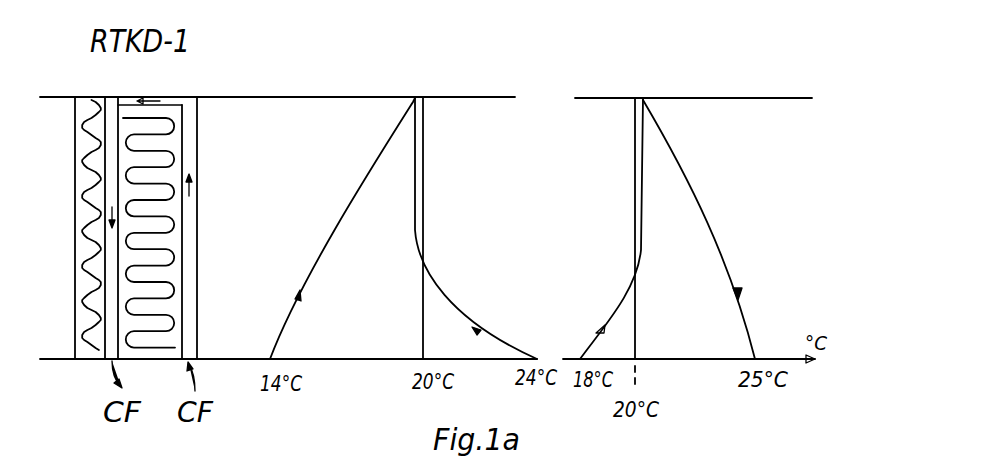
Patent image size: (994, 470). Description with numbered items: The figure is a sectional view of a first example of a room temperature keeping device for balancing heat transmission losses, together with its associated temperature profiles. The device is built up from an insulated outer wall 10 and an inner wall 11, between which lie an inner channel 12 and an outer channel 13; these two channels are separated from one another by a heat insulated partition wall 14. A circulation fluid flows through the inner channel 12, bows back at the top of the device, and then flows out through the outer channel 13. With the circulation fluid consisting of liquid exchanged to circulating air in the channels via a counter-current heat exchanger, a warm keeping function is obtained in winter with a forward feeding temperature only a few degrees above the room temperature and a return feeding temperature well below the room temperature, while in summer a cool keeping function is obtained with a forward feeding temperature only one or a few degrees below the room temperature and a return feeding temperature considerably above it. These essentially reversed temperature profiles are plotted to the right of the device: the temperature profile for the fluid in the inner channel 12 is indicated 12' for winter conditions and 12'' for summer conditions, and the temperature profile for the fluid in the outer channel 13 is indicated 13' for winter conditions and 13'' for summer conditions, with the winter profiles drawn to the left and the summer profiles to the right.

The insulated outer wall 10 is at (83, 267).
The inner wall 11 is at (199, 263).
The inner channel 12 is at (178, 228).
The outer channel 13 is at (72, 225).
The heat insulated partition wall 14 is at (165, 306).
The temperature profile for the fluid in the inner channel (winter) 12' is at (476, 228).
The temperature profile for the fluid in the outer channel (winter) 13' is at (342, 228).
The temperature profile for the fluid in the inner channel (summer) 12'' is at (611, 228).
The temperature profile for the fluid in the outer channel (summer) 13'' is at (716, 229).